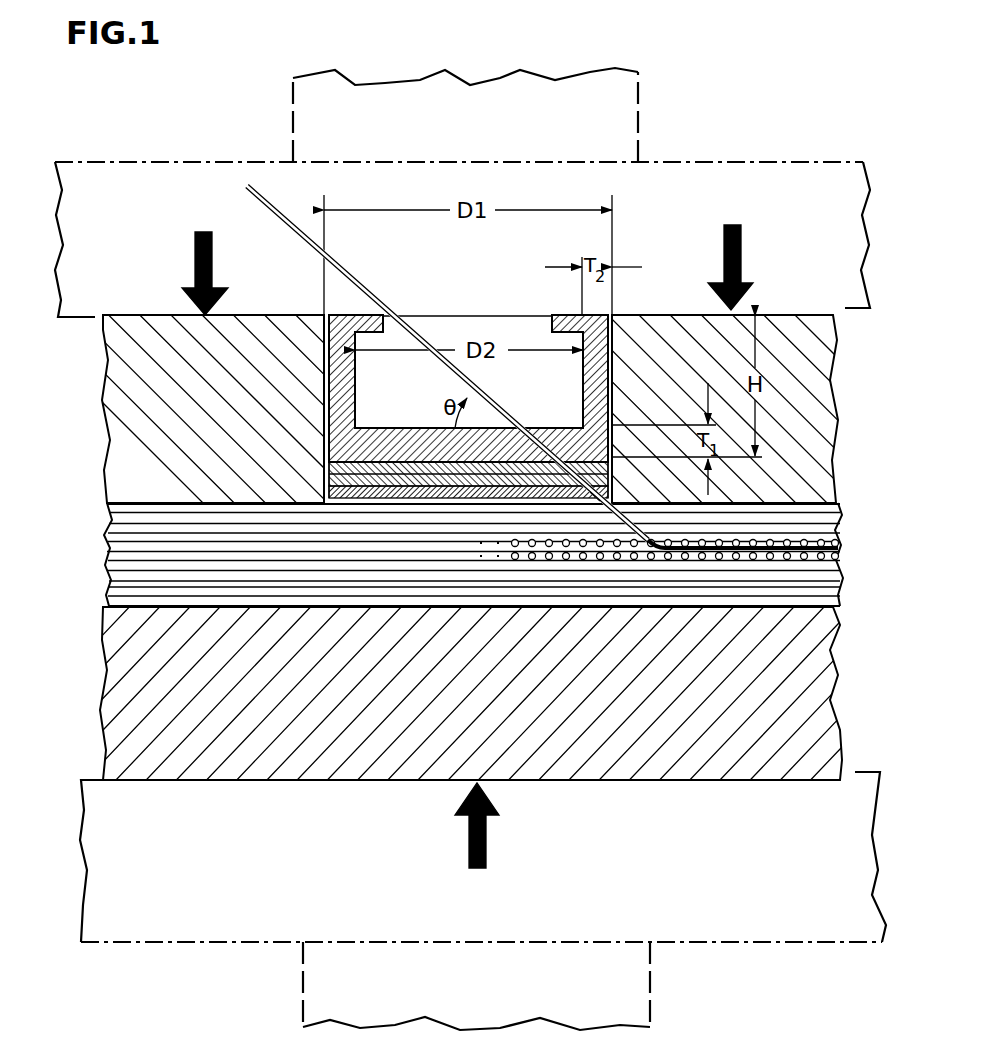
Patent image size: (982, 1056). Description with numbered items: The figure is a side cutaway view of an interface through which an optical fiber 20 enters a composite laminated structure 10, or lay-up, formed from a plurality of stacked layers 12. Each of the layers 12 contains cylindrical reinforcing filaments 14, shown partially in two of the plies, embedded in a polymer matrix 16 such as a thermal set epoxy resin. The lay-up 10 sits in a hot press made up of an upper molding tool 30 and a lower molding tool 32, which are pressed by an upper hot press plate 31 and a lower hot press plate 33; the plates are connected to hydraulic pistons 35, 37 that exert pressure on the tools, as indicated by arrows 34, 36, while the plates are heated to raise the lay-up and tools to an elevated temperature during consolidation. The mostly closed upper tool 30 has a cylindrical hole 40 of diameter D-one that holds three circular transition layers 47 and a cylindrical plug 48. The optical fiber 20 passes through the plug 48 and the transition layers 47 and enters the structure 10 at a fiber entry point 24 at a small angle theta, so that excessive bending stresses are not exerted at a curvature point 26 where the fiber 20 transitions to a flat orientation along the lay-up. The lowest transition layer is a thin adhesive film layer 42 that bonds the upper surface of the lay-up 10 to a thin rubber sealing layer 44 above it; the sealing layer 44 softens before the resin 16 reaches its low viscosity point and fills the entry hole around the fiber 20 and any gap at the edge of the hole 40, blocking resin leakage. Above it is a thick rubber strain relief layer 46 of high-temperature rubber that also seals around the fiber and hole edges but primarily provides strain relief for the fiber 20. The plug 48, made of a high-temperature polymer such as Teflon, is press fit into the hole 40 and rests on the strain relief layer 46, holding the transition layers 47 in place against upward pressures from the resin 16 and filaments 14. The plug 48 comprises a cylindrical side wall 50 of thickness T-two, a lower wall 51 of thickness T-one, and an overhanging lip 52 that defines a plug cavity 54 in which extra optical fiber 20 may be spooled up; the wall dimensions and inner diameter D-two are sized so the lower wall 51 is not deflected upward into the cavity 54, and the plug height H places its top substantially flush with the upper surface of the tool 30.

The composite laminated structure 10 is at (464, 546).
The stacked layers 12 is at (112, 527).
The reinforcing filaments 14 is at (838, 542).
The polymer matrix 16 is at (835, 527).
The optical fiber 20 is at (546, 366).
The fiber entry point 24 is at (600, 504).
The curvature point 26 is at (660, 545).
The upper molding tool 30 is at (103, 400).
The upper hot press plate 31 is at (656, 209).
The lower molding tool 32 is at (102, 678).
The lower hot press plate 33 is at (348, 884).
The pressure arrow 34 is at (196, 262).
The hydraulic piston 35 is at (459, 139).
The pressure arrow 36 is at (487, 850).
The hydraulic piston 37 is at (461, 1002).
The cylindrical hole 40 is at (438, 350).
The adhesive film layer 42 is at (328, 496).
The rubber sealing layer 44 is at (328, 478).
The rubber strain relief layer 46 is at (330, 470).
The transition layers 47 is at (624, 462).
The cylindrical plug 48 is at (420, 313).
The cylindrical side wall 50 is at (356, 394).
The lower wall 51 is at (430, 431).
The overhanging lip 52 is at (567, 336).
The plug cavity 54 is at (452, 322).